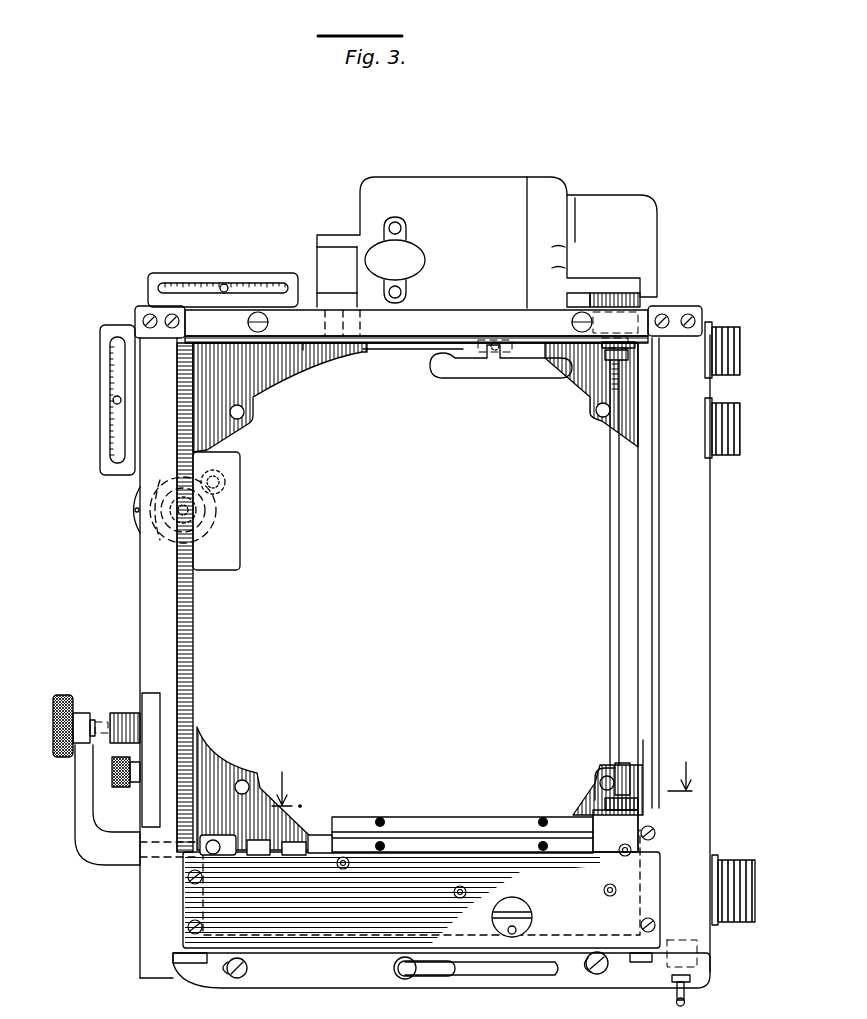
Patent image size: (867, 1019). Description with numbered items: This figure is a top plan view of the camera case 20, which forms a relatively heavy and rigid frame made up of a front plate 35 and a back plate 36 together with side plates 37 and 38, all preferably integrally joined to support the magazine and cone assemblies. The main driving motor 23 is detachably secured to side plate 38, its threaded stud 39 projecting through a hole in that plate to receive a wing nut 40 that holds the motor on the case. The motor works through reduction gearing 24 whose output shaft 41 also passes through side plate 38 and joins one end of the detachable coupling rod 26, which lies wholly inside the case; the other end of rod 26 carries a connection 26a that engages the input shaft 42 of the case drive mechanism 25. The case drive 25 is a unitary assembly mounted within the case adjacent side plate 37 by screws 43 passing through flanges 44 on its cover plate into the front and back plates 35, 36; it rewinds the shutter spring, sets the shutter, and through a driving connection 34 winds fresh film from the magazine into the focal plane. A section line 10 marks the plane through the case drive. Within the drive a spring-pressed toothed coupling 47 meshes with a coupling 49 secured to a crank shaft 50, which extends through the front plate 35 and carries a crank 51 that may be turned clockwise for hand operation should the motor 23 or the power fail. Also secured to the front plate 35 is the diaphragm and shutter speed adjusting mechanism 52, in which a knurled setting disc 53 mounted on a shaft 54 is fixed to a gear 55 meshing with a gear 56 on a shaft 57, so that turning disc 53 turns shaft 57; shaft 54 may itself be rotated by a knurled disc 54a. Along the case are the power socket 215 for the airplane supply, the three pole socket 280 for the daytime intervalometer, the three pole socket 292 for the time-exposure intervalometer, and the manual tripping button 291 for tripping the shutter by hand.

The section line 10- 10 is at (491, 778).
The camera case 20 is at (414, 579).
The main driving motor 23 is at (468, 192).
The reduction gearing 24 is at (640, 216).
The case drive mechanism 25 is at (436, 801).
The detachable coupling rod 26 is at (622, 548).
The connection 26a is at (614, 776).
The driving connection 34 is at (518, 906).
The front plate 35 is at (152, 626).
The back plate 36 is at (708, 670).
The side plate 37 is at (182, 978).
The side plate 38 is at (310, 318).
The threaded stud 39 is at (497, 342).
The wing nut 40 is at (470, 370).
The output shaft 41 is at (606, 340).
The input shaft 42 is at (628, 814).
The screws 43 is at (656, 834).
The flanges 44 is at (654, 874).
The toothed coupling 47 is at (297, 845).
The coupling 49 is at (275, 846).
The crank shaft 50 is at (246, 846).
The crank 51 is at (86, 786).
The diaphragm and shutter speed adjusting mechanism 52 is at (175, 510).
The knurled setting disc 53 is at (160, 556).
The shaft 54 is at (180, 470).
The knurled disc 54a is at (134, 502).
The gear 55 is at (222, 519).
The gear 56 is at (222, 483).
The shaft 57 is at (232, 462).
The socket 215 is at (756, 894).
The three pole socket 280 is at (739, 347).
The manual tripping button 291 is at (690, 997).
The three pole socket 292 is at (740, 440).